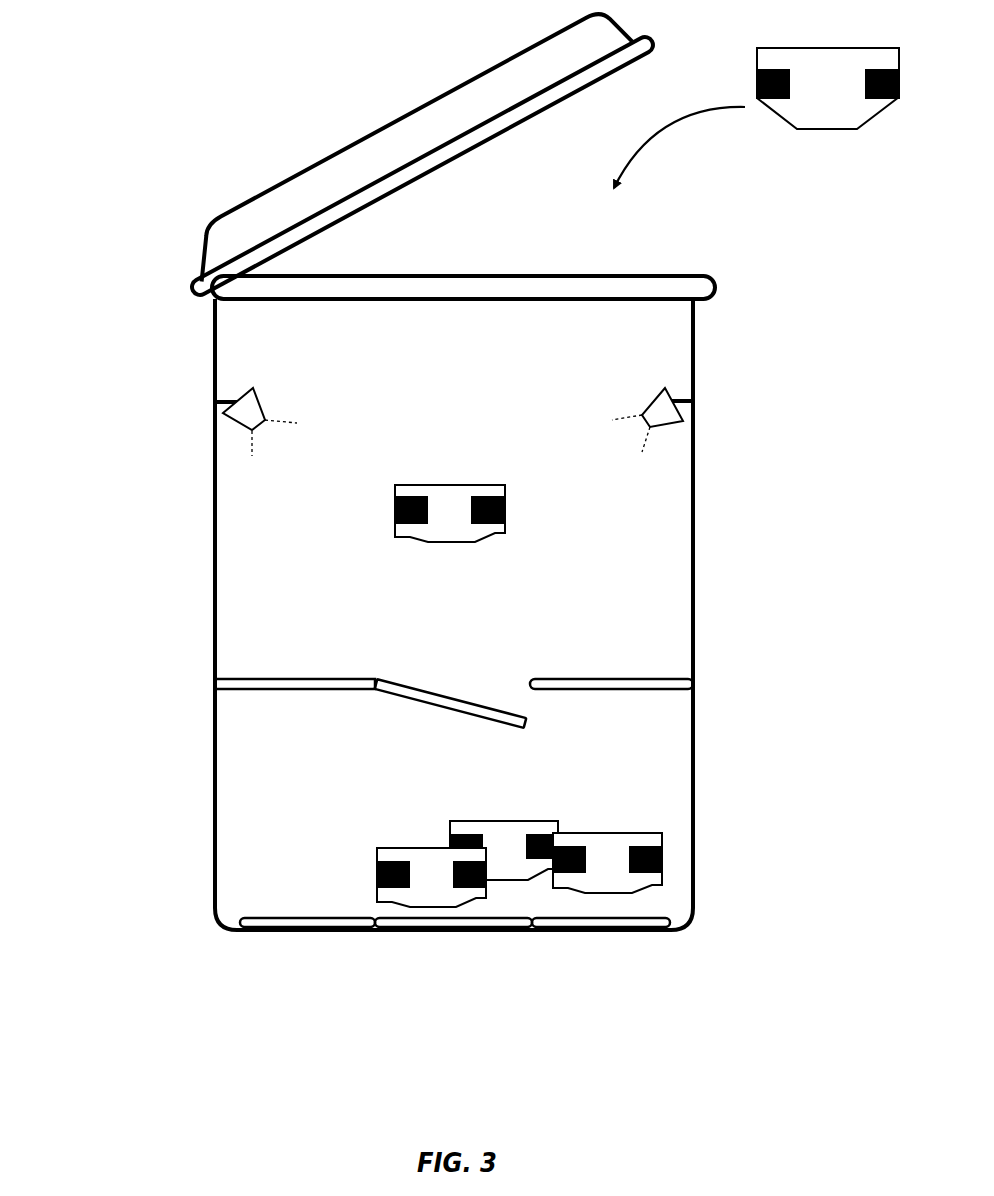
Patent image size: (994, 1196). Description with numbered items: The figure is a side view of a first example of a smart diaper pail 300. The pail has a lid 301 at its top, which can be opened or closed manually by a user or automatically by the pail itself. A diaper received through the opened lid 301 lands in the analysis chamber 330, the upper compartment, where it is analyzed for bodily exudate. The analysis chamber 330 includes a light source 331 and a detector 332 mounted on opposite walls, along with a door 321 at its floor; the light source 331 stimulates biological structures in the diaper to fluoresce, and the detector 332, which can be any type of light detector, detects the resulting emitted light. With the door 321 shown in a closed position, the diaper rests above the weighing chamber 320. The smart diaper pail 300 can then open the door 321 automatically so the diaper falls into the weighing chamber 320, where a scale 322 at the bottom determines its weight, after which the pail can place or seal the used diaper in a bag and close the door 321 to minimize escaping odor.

The smart diaper pail 300 is at (473, 465).
The lid 301 is at (485, 60).
The weighing chamber 320 is at (347, 761).
The door 321 is at (505, 666).
The scale 322 is at (668, 910).
The analysis chamber 330 is at (350, 666).
The light source 331 is at (232, 428).
The detector 332 is at (676, 436).